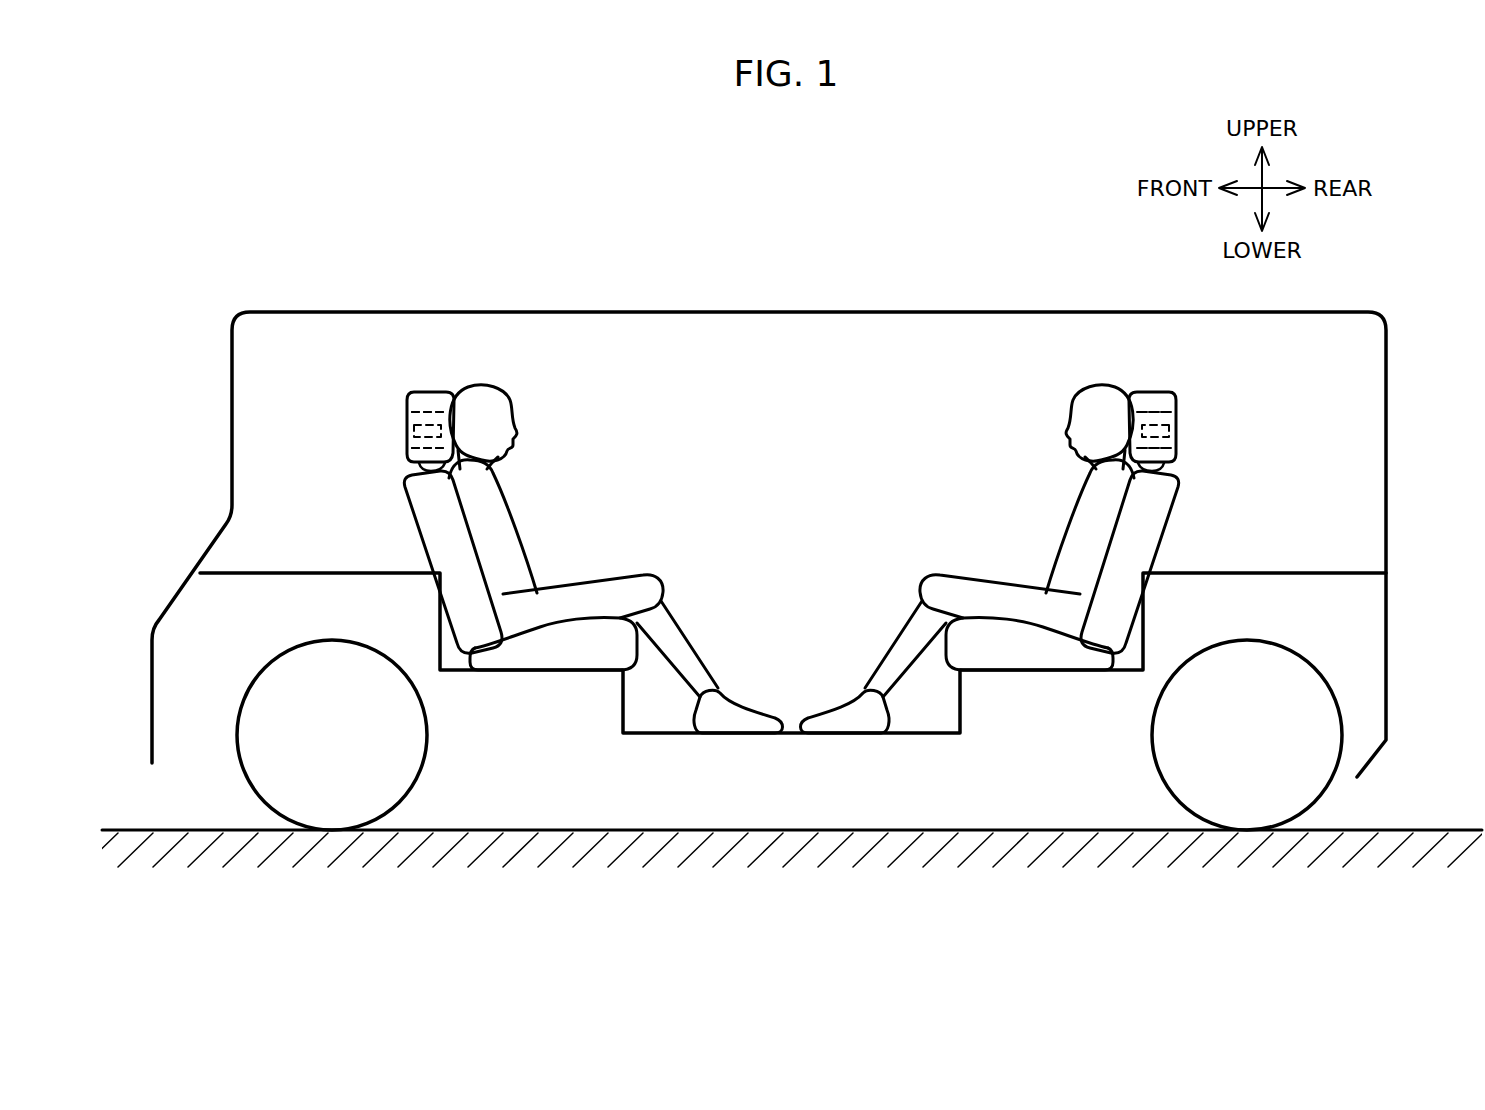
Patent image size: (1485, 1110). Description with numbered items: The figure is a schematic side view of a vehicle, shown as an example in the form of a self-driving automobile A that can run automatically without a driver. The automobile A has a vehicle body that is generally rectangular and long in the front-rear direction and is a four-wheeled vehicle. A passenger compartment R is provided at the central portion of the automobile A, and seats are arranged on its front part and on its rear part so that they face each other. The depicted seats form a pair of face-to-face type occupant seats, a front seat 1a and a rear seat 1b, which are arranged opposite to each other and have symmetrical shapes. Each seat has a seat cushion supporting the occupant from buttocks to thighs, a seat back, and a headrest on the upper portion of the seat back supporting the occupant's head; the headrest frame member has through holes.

The front seat 1a is at (487, 602).
The rear seat 1b is at (1095, 602).
The automobile A is at (667, 286).
The passenger compartment R is at (795, 386).